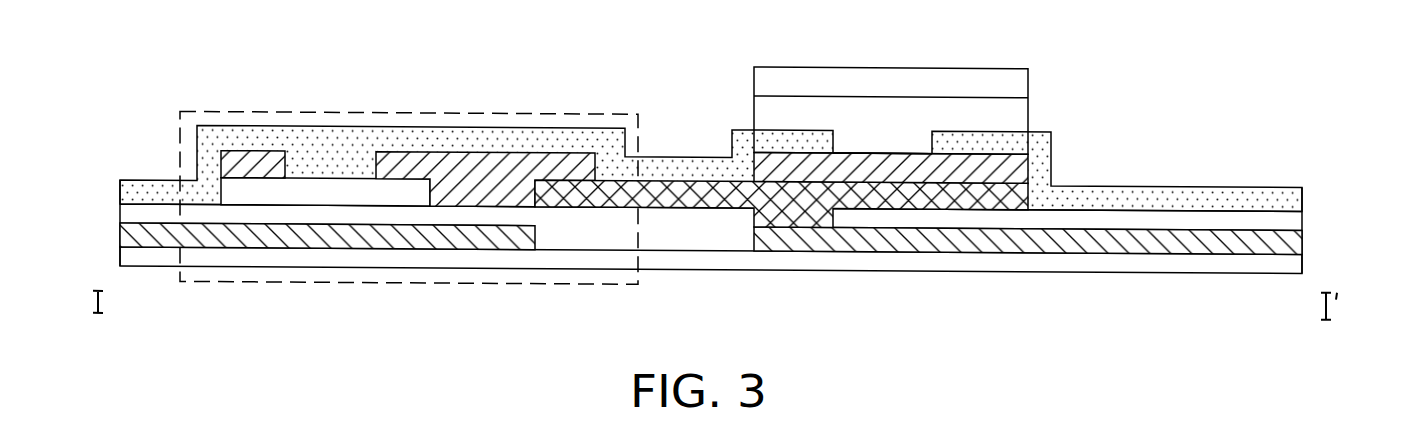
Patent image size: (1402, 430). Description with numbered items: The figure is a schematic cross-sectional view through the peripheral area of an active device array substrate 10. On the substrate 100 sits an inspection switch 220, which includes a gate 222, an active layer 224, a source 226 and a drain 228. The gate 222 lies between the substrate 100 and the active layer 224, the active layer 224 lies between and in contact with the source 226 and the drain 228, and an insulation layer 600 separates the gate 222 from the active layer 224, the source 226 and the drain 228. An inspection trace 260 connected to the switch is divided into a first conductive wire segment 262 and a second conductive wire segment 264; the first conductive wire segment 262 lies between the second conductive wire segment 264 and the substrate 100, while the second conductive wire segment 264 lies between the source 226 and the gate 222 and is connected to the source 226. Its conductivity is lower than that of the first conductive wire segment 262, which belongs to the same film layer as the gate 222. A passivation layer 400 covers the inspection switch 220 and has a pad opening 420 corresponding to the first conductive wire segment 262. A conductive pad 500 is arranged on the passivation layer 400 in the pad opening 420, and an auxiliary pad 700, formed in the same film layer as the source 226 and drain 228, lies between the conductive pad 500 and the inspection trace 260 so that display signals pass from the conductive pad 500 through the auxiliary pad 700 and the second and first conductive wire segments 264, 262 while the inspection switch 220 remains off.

The active device array substrate 10 is at (710, 197).
The substrate 100 is at (1293, 258).
The inspection switch 220 is at (348, 167).
The gate 222 is at (127, 242).
The active layer 224 is at (333, 194).
The source 226 is at (493, 171).
The drain 228 is at (256, 166).
The inspection trace 260 is at (918, 253).
The first conductive wire segment 262 is at (1190, 235).
The second conductive wire segment 264 is at (695, 196).
The passivation layer 400 is at (1038, 137).
The pad opening 420 is at (930, 138).
The conductive pad 500 is at (1020, 108).
The insulation layer 600 is at (127, 213).
The auxiliary pad 700 is at (1022, 164).